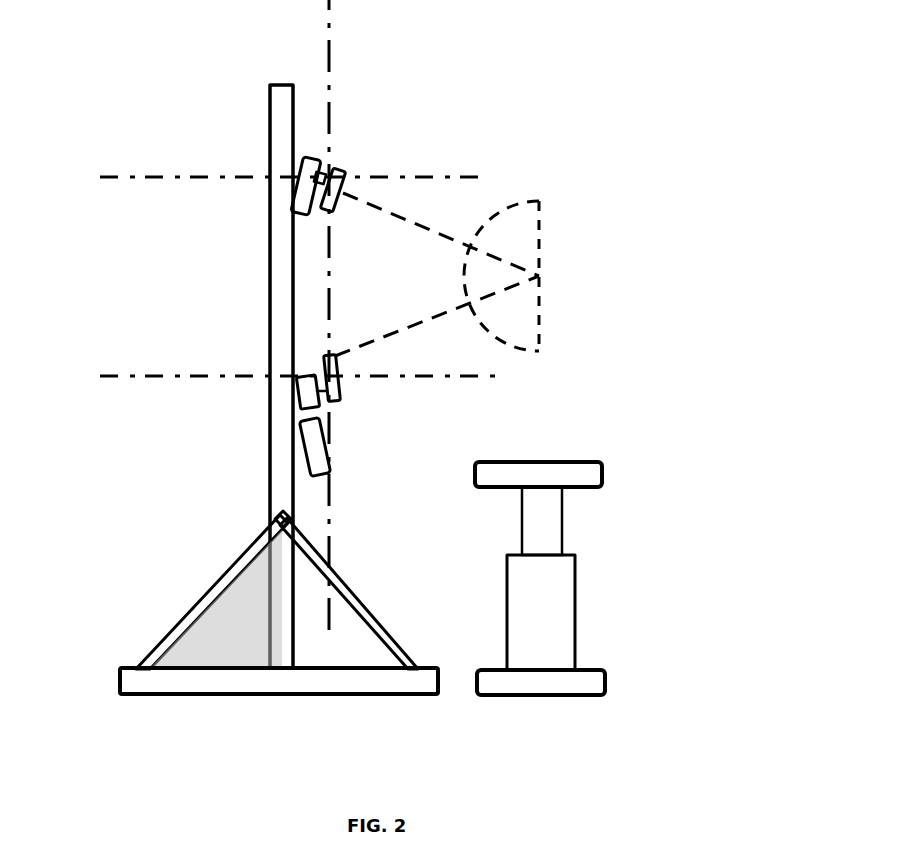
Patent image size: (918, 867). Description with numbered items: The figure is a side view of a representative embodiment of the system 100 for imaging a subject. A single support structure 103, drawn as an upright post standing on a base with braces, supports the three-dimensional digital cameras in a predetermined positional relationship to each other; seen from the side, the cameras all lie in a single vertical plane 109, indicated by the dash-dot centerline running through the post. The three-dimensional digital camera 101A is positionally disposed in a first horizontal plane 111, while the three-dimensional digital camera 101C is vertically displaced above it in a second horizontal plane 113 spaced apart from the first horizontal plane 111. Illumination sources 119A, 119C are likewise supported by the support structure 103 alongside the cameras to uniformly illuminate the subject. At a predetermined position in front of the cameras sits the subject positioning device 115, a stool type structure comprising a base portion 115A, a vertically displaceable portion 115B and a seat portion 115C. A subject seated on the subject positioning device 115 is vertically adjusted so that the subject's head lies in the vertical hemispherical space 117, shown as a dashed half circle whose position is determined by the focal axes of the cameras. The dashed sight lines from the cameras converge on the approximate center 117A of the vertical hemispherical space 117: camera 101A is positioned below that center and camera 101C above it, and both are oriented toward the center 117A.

The system 100 is at (134, 793).
The three-dimensional digital camera 101A is at (351, 359).
The three-dimensional digital camera 101C is at (340, 180).
The support structure 103 is at (205, 478).
The vertical plane 109 is at (330, 485).
The first horizontal plane 111 is at (123, 383).
The second horizontal plane 113 is at (130, 183).
The subject positioning device 115 is at (624, 539).
The base portion 115A is at (562, 632).
The vertically displaceable portion 115B is at (552, 523).
The seat portion 115C is at (600, 470).
The vertical hemispherical space 117 is at (541, 199).
The center of vertical hemispherical space 117A is at (540, 276).
The illumination source 119A is at (330, 442).
The illumination source 119C is at (318, 160).